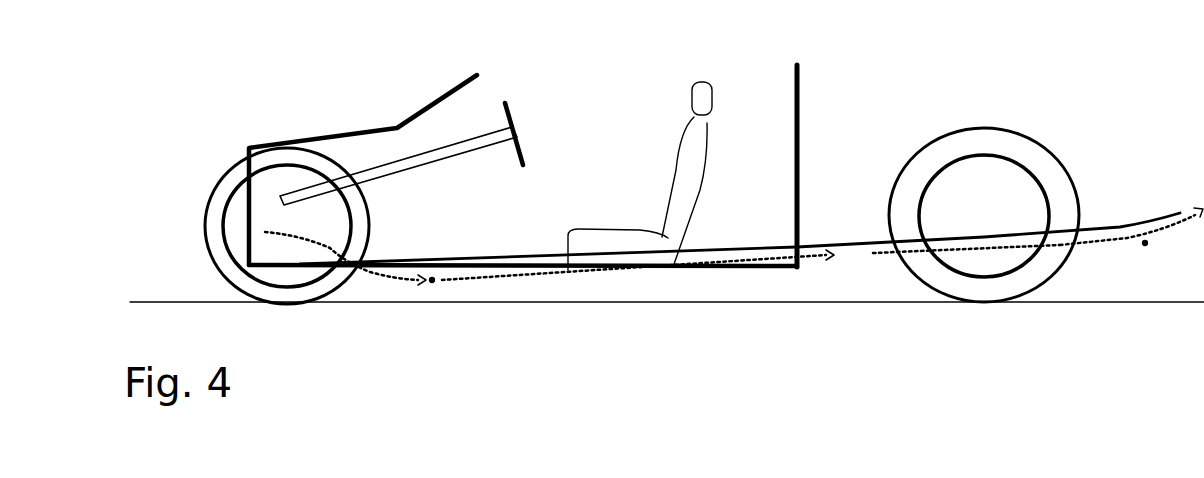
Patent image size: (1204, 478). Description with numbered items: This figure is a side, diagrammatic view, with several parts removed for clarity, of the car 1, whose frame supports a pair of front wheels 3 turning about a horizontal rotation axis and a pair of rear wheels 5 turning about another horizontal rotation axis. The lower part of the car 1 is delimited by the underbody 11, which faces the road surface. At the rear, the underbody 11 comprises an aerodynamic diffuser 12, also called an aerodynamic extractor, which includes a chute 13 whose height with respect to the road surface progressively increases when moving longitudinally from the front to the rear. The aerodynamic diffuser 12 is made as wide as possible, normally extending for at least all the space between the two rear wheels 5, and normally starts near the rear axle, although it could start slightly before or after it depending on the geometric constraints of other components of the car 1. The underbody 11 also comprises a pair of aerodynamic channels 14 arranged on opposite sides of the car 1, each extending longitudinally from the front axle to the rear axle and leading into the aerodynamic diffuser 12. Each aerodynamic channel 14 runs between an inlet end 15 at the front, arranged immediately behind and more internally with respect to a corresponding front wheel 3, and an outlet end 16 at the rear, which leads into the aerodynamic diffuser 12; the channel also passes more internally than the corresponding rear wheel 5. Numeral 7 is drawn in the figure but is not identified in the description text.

The car 1 is at (474, 150).
The front wheels 3 is at (284, 290).
The rear wheels 5 is at (988, 288).
The seat 7 is at (614, 66).
The underbody 11 is at (686, 296).
The aerodynamic diffuser 12 is at (1147, 240).
The chute 13 is at (1117, 223).
The aerodynamic channels 14 is at (432, 283).
The inlet end 15 is at (231, 245).
The outlet end 16 is at (1100, 251).